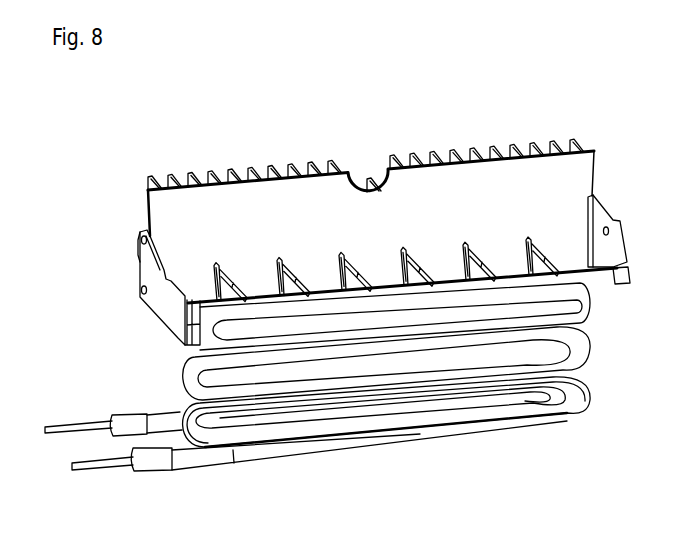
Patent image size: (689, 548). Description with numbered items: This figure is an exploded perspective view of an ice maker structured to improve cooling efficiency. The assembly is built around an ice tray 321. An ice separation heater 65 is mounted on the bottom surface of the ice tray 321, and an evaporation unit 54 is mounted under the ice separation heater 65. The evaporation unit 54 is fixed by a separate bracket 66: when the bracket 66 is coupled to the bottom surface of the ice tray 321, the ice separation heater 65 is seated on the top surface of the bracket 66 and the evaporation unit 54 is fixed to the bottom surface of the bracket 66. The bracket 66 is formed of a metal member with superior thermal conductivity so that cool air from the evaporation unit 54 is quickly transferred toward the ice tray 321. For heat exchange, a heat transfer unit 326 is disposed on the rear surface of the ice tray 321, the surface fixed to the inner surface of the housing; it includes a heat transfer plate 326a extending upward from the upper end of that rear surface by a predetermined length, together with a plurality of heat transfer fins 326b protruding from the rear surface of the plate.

The heat transfer unit 326 is at (366, 125).
The heat transfer plate 326a is at (522, 173).
The heat transfer fins 326b is at (468, 126).
The ice tray 321 is at (600, 208).
The ice separation heater 65 is at (570, 342).
The bracket 66 is at (572, 393).
The evaporation unit 54 is at (195, 458).